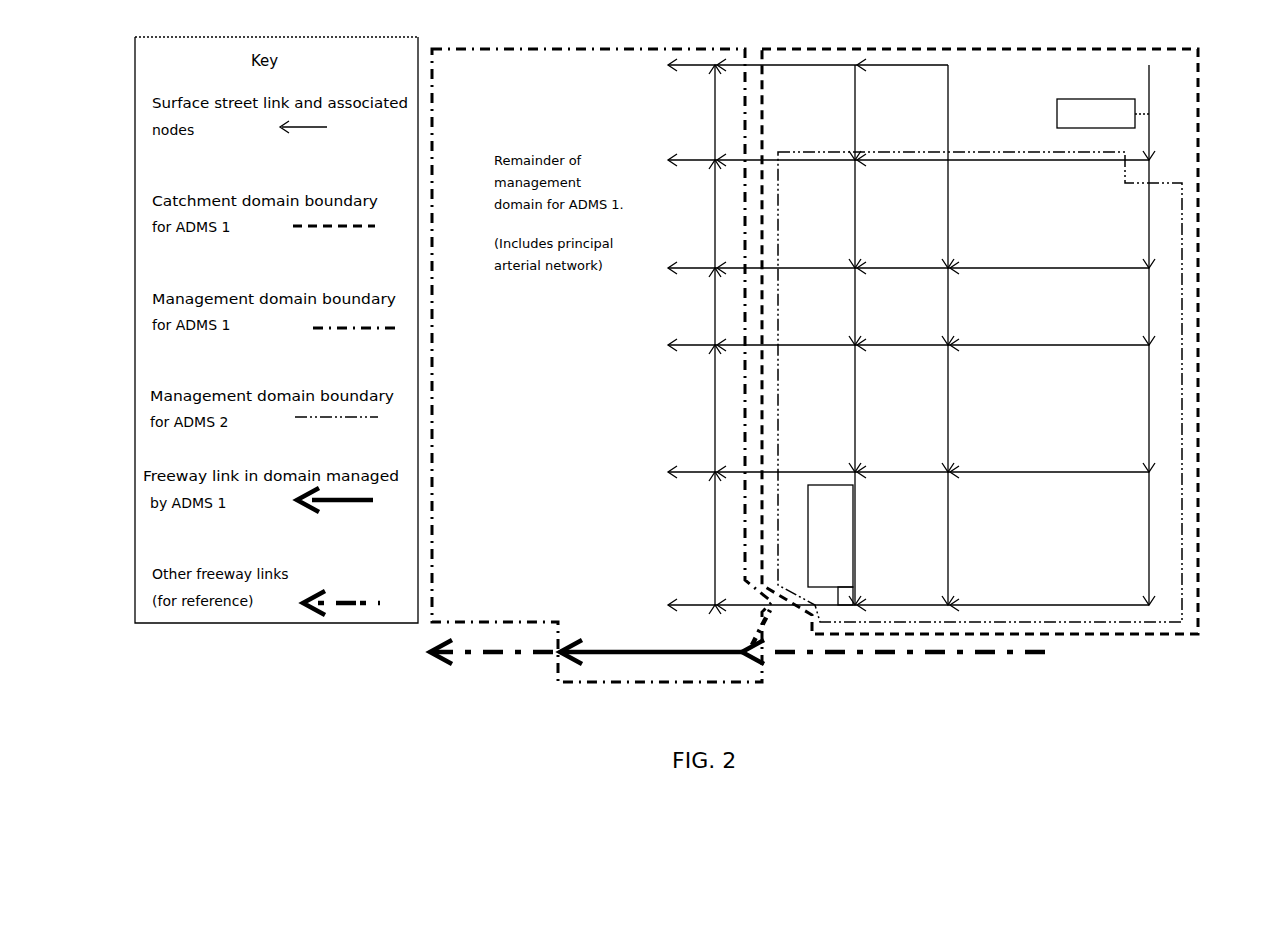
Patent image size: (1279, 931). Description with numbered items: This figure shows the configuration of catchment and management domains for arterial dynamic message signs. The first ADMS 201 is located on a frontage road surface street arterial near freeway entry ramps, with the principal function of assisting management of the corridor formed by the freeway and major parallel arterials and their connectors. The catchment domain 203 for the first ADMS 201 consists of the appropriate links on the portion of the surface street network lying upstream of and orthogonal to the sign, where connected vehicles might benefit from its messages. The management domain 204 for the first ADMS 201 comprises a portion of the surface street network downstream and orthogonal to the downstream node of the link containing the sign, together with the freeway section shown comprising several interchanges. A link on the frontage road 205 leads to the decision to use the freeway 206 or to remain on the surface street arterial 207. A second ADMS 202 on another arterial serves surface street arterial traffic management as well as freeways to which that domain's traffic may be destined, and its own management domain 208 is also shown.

The ADMS 1 201 is at (853, 577).
The second ADMS 202 is at (1110, 99).
The catchment domain 203 is at (1003, 47).
The management domain 204 is at (688, 46).
The link on the frontage road 205 is at (790, 608).
The freeway 206 is at (735, 603).
The surface street arterial 207 is at (745, 600).
The management domain for ADMS 2 208 is at (1185, 293).